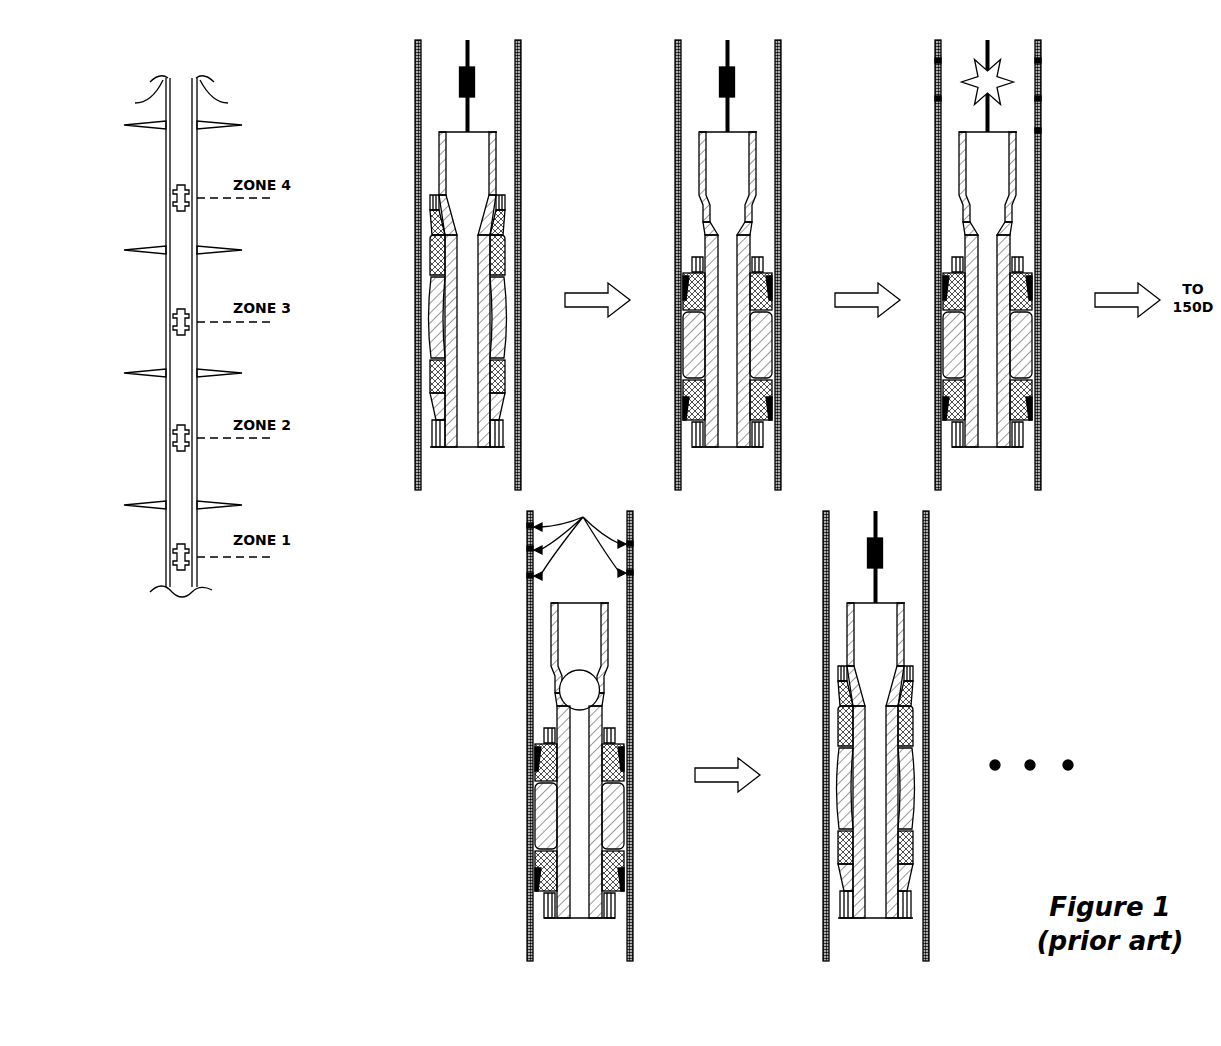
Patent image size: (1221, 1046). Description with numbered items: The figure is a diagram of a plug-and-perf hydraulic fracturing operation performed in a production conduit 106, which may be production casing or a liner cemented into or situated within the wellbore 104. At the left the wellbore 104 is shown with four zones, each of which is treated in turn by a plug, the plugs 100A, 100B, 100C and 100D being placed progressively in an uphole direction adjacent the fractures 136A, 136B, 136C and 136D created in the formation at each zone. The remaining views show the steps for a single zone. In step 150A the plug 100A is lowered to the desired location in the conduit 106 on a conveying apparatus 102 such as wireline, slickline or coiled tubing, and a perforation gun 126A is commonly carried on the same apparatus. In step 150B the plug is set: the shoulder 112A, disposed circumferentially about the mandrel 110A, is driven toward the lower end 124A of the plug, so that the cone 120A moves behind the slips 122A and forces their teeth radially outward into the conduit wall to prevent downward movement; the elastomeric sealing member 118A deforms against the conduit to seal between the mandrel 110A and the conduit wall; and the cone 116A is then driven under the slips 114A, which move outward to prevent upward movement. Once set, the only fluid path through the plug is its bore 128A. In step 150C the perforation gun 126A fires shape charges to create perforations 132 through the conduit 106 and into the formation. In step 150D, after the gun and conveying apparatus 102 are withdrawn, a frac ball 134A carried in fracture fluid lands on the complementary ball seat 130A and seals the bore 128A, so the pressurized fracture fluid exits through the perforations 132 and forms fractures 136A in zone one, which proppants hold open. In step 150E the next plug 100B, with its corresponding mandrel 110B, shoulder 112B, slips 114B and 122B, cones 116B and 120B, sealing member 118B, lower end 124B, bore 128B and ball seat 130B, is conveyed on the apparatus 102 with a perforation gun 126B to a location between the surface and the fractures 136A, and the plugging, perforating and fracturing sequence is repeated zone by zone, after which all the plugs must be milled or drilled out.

The plug 100A is at (176, 557).
The plug 100B is at (176, 438).
The downhole tool (third stage) 100C is at (176, 322).
The downhole tool (fourth stage) 100D is at (176, 198).
The conveying apparatus 102 is at (466, 123).
The wellbore 104 is at (200, 103).
The production conduit 106 is at (173, 103).
The mandrel 110A is at (496, 152).
The tool housing 110B is at (914, 627).
The shoulder 112A is at (505, 203).
The upper slips 112B is at (911, 655).
The slips 114A is at (503, 226).
The upper cone 114B is at (911, 688).
The cone 116A is at (505, 262).
The upper backup ring 116B is at (911, 725).
The sealing member 118A is at (505, 330).
The packer sealing element 118B is at (912, 793).
The cone 120A is at (505, 380).
The lower backup ring 120B is at (912, 855).
The slips 122A is at (503, 412).
The lower cone 122B is at (912, 891).
The lower slips 124A is at (503, 440).
The lower slips 124B is at (913, 921).
The perforation gun 126A is at (459, 84).
The setting tool / firing head 126B is at (827, 547).
The plug bore 128A is at (466, 306).
The mandrel 128B is at (837, 812).
The ball seat 130A is at (440, 236).
The collar 130B is at (836, 705).
The perforations 132 is at (522, 76).
The frac ball 134A is at (627, 675).
The fractures 136A is at (210, 503).
The perforated zone 136B is at (210, 377).
The perforated zone 136C is at (210, 254).
The perforated zone 136D is at (210, 129).
The step 150A is at (467, 469).
The step 150B is at (727, 469).
The step 150C is at (987, 469).
The step 150D is at (579, 939).
The step 150E is at (875, 939).